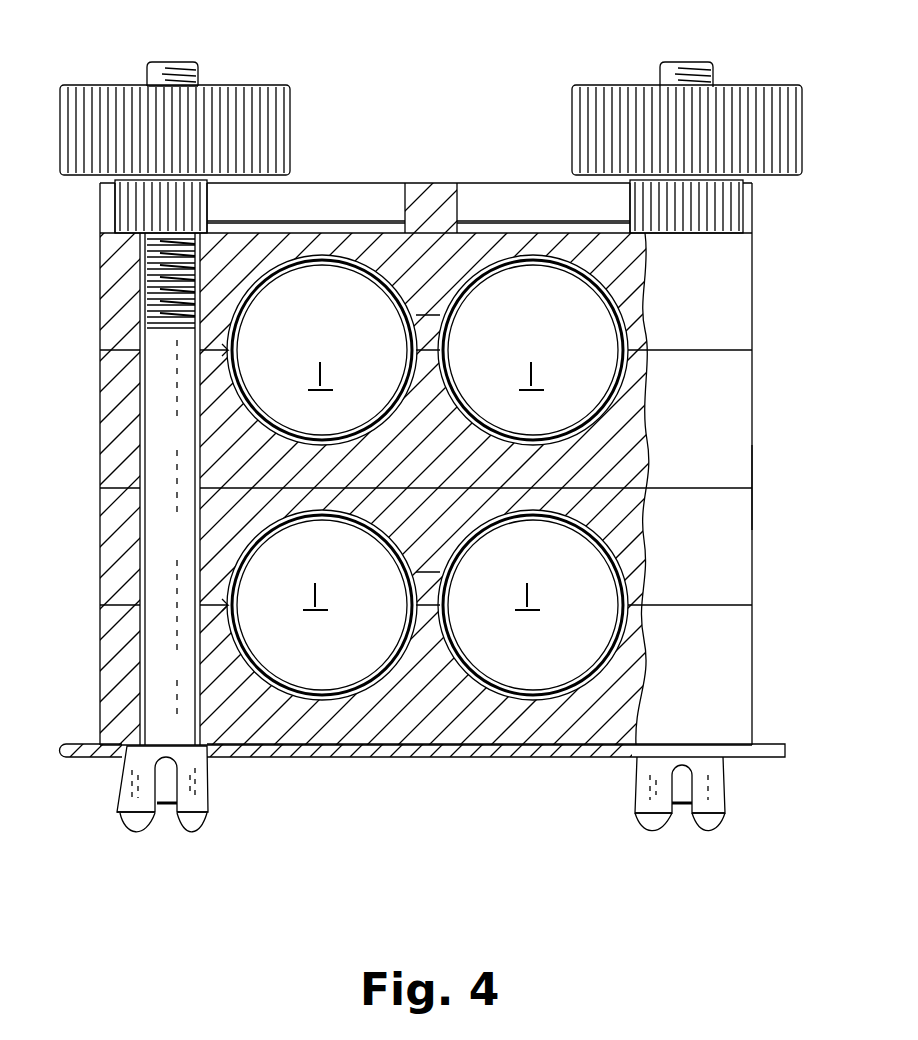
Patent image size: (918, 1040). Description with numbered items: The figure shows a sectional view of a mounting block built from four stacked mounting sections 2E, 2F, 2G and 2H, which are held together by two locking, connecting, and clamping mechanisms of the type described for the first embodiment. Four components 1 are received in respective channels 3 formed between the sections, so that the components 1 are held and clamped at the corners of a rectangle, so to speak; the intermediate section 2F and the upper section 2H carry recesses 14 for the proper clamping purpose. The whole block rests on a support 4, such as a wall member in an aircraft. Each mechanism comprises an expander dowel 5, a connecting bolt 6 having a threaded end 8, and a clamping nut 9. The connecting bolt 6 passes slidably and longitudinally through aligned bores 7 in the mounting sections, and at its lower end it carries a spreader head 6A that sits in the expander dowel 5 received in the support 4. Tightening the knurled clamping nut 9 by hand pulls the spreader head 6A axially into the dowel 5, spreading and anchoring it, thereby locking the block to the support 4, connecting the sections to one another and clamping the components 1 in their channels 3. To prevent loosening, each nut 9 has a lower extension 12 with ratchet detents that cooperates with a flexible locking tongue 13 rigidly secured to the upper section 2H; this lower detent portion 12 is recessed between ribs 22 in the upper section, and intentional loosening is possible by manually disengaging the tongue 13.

The components 1 is at (585, 655).
The channels 3 is at (550, 697).
The support 4 is at (475, 750).
The expander dowel 5 is at (200, 783).
The connecting bolt 6 is at (185, 60).
The spreader head 6A is at (163, 787).
The aligned bores 7 is at (140, 538).
The threaded end 8 is at (147, 72).
The clamping nut 9 is at (283, 118).
The lower extension 12 is at (118, 210).
The locking tongue 13 is at (475, 193).
The recesses 14 is at (430, 333).
The ribs 22 is at (102, 198).
The mounting section 2E is at (738, 678).
The intermediate mounting section 2F is at (740, 518).
The mounting section 2G is at (733, 408).
The upper mounting section 2H is at (745, 305).